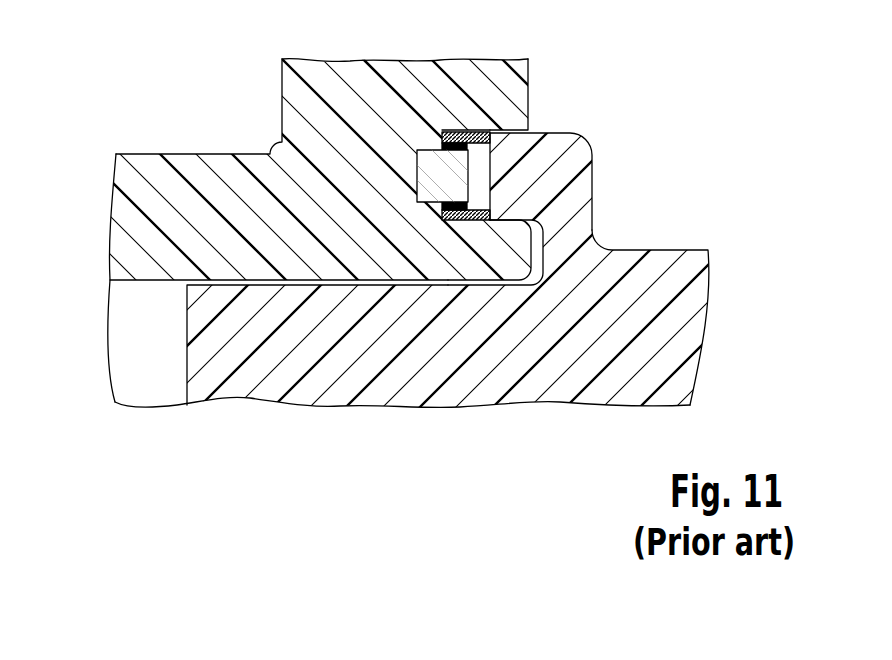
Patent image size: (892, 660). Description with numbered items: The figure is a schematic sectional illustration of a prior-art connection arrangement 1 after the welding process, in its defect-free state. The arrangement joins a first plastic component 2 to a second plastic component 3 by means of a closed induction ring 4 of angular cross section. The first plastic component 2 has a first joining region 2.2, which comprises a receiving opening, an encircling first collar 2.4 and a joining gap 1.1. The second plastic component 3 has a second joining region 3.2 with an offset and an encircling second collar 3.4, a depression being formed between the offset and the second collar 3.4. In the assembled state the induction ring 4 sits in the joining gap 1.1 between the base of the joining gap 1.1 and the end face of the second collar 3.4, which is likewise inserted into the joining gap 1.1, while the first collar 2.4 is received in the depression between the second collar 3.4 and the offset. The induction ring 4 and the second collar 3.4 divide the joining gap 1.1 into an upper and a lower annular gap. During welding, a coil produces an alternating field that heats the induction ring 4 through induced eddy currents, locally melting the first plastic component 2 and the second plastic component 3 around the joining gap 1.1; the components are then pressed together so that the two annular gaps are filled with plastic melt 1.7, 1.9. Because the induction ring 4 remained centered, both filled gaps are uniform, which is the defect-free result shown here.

The connection arrangement 1 is at (443, 156).
The joining gap 1.1 is at (497, 105).
The plastic melt 1.7 is at (461, 129).
The plastic melt 1.9 is at (452, 222).
The first plastic component 2 is at (371, 232).
The first joining region 2.2 is at (407, 97).
The first collar 2.4 is at (507, 258).
The second plastic component 3 is at (484, 270).
The second joining region 3.2 is at (553, 238).
The second collar 3.4 is at (477, 173).
The induction ring 4 is at (417, 175).